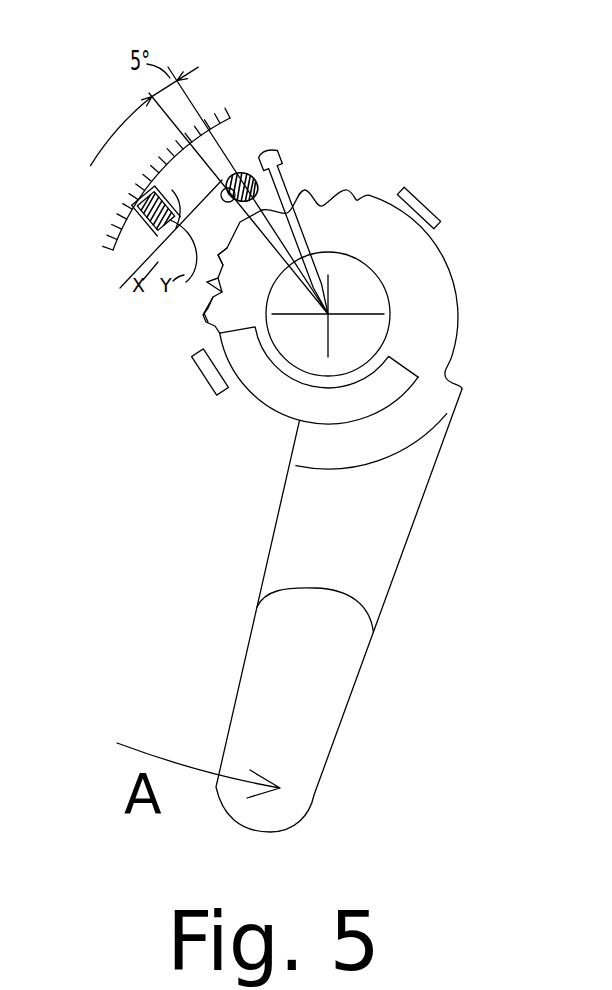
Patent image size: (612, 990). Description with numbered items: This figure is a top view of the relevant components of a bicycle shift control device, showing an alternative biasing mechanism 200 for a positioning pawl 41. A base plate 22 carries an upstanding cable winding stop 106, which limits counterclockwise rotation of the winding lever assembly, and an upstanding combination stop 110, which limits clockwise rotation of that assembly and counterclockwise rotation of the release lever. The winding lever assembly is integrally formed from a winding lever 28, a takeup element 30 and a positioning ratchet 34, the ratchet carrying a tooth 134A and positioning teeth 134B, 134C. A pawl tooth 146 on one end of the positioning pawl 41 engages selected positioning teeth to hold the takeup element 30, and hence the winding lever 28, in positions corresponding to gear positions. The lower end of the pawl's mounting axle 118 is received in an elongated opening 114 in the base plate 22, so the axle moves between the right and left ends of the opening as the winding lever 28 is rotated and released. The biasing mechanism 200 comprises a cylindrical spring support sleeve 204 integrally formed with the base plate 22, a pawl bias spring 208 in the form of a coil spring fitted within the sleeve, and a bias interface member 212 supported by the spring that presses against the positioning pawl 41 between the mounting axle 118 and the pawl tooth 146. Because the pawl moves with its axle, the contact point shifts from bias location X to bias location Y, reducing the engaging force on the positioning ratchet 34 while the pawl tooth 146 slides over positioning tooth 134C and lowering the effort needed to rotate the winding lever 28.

The base plate 22 is at (112, 250).
The winding lever 28 is at (427, 500).
The takeup element 30 is at (457, 283).
The positioning ratchet 34 is at (321, 177).
The positioning pawl 41 is at (280, 158).
The cable winding stop 106 is at (430, 203).
The combination stop 110 is at (202, 385).
The elongated opening 114 is at (221, 192).
The mounting axle 118 is at (245, 172).
The tooth 134A is at (209, 316).
The positioning tooth 134B is at (215, 289).
The positioning tooth 134C is at (223, 262).
The pawl tooth 146 is at (190, 281).
The biasing mechanism 200 is at (164, 174).
The spring support sleeve 204 is at (137, 207).
The pawl bias spring 208 is at (138, 208).
The bias interface member 212 is at (120, 288).